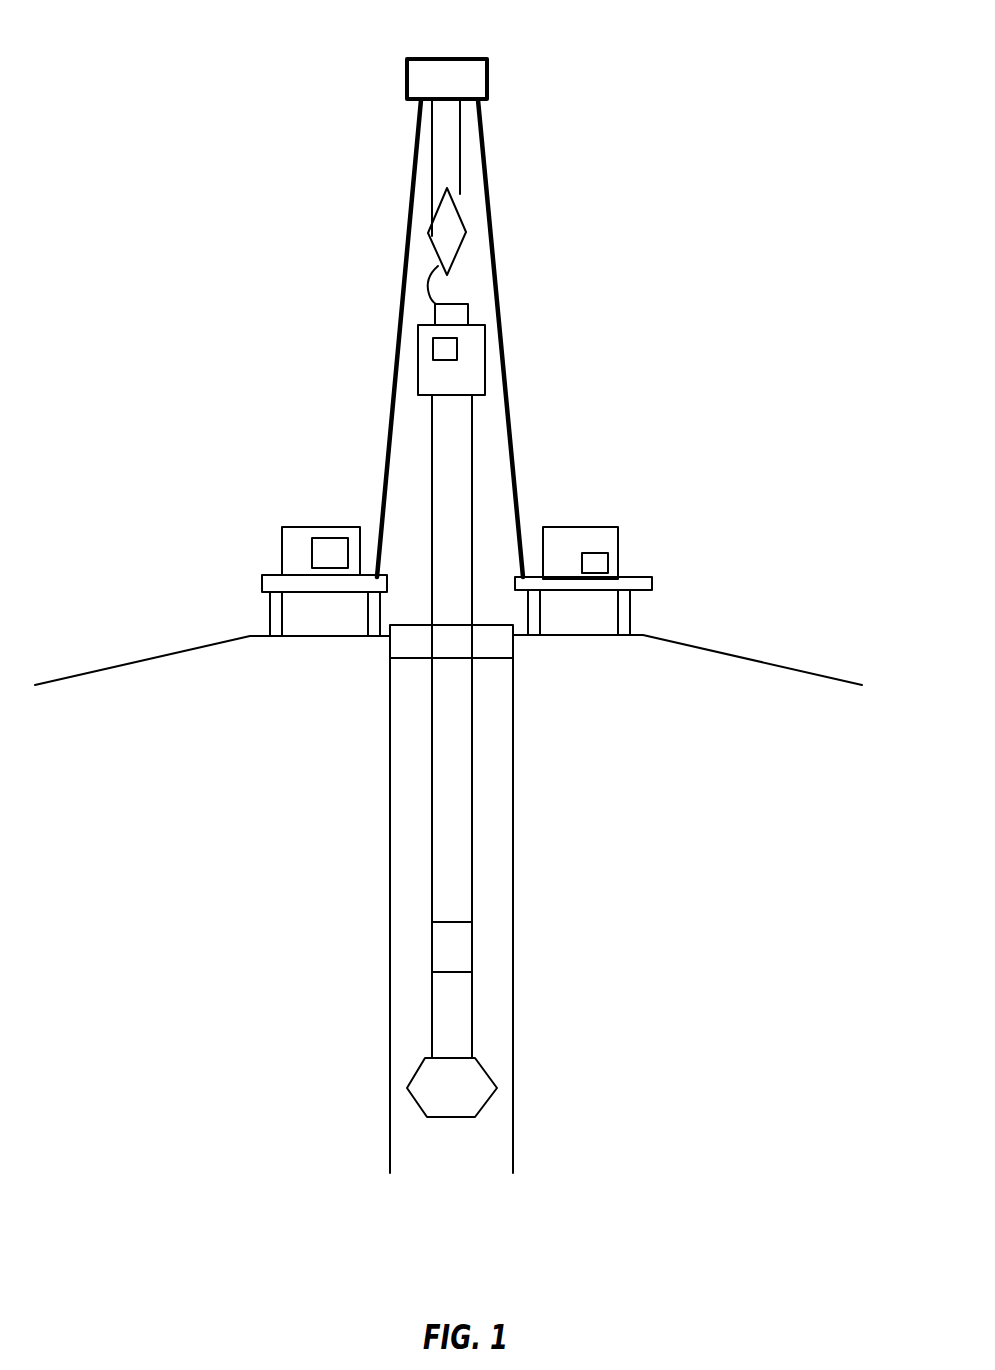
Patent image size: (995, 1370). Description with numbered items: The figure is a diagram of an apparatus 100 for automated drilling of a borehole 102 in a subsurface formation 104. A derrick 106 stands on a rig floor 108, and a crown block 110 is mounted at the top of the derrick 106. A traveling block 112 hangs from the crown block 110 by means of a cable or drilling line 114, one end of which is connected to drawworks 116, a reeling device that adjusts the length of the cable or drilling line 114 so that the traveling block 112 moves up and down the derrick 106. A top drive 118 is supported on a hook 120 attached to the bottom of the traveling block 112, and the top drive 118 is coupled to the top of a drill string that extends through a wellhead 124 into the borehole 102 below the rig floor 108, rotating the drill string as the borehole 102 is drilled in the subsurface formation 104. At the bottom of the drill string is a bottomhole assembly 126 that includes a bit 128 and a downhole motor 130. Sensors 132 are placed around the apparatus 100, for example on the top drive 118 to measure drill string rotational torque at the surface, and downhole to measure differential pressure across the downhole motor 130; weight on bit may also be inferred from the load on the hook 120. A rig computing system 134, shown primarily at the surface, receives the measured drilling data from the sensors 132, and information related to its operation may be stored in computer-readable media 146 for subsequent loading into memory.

The apparatus 100 is at (252, 67).
The borehole 102 is at (408, 715).
The subsurface formation 104 is at (233, 692).
The derrick 106 is at (518, 470).
The rig floor 108 is at (275, 585).
The crown block 110 is at (485, 78).
The traveling block 112 is at (450, 225).
The cable or drilling line 114 is at (430, 173).
The drawworks 116 is at (290, 535).
The top drive 118 is at (473, 347).
The hook 120 is at (432, 270).
The wellhead 124 is at (493, 647).
The bottomhole assembly 126 is at (473, 833).
The bit 128 is at (450, 1088).
The downhole motor 130 is at (457, 1003).
The sensors 132 is at (440, 345).
The rig computing system 134 is at (563, 553).
The computer-readable media 146 is at (590, 563).